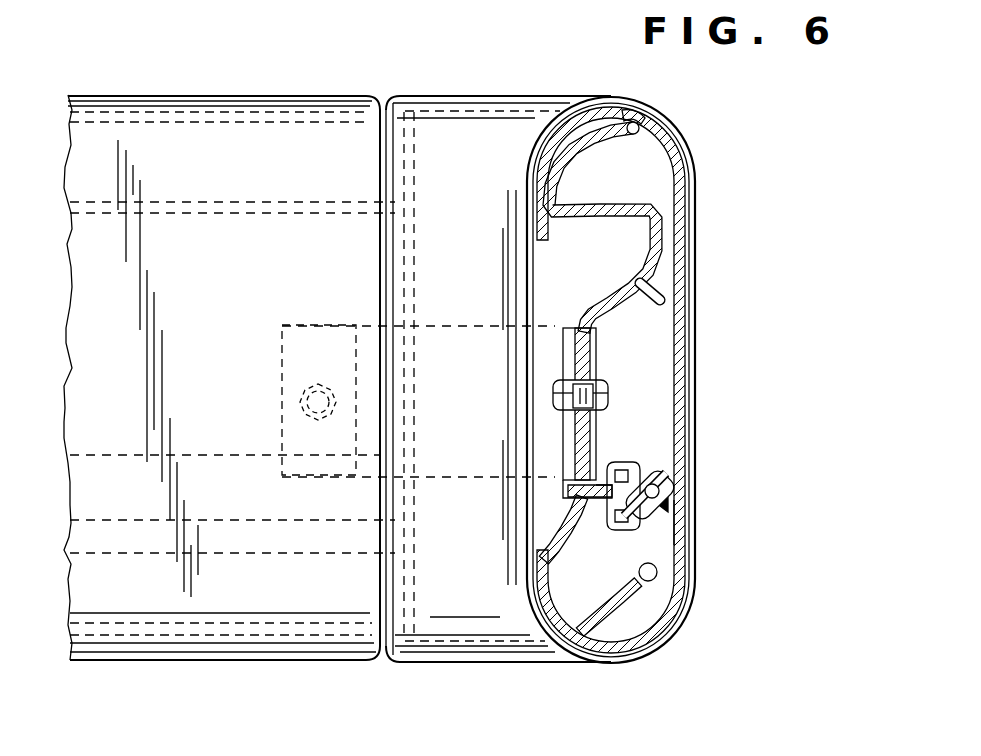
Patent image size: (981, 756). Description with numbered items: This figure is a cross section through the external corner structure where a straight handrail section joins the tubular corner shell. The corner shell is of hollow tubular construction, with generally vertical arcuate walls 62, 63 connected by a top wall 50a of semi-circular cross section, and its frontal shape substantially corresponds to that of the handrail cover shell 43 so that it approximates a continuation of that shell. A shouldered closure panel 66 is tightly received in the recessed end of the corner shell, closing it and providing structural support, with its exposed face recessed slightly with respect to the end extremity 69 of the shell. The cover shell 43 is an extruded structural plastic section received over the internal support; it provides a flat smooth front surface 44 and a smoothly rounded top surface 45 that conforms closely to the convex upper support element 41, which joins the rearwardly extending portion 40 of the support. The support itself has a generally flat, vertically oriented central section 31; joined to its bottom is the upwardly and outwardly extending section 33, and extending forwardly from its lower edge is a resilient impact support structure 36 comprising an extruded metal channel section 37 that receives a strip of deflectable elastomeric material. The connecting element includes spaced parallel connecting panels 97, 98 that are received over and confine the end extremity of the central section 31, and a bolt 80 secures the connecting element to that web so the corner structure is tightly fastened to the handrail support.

The end extremity 69 is at (374, 139).
The top wall 50a is at (617, 98).
The smoothly rounded top surface 45 is at (634, 116).
The convex upper support element 41 is at (577, 138).
The rearwardly extending portion 40 is at (583, 204).
The cover shell 43 is at (692, 262).
The outwardly facing wall 63 is at (696, 318).
The shouldered closure panel 66 is at (558, 243).
The vertical arcuate wall 62 is at (526, 270).
The connecting panel 97 is at (283, 324).
The connecting panel 98 is at (350, 345).
The bolt 80 is at (314, 382).
The central section 31 is at (574, 360).
The channel section 37 is at (624, 478).
The resilient impact support structure 36 is at (644, 472).
The flat smooth front surface 44 is at (682, 519).
The upwardly and outwardly extending section 33 is at (648, 594).